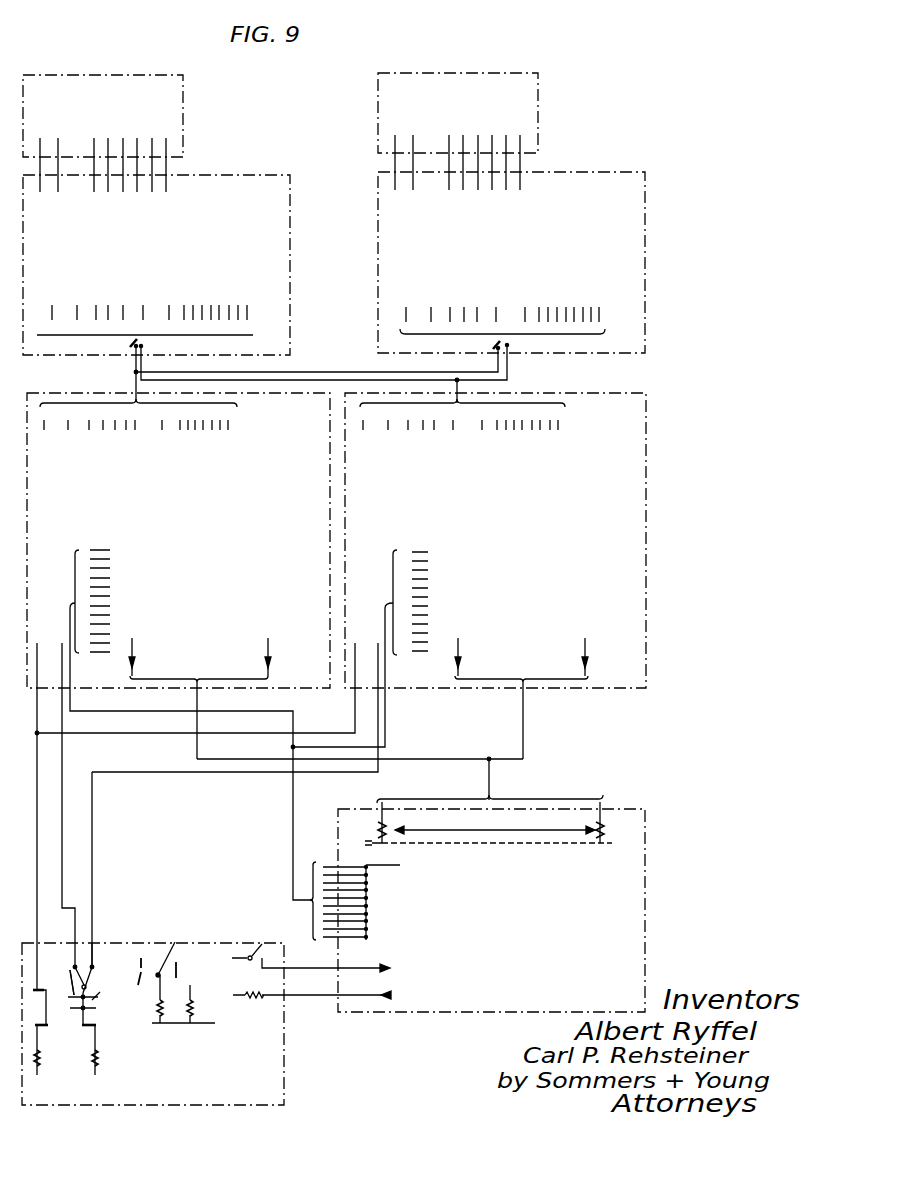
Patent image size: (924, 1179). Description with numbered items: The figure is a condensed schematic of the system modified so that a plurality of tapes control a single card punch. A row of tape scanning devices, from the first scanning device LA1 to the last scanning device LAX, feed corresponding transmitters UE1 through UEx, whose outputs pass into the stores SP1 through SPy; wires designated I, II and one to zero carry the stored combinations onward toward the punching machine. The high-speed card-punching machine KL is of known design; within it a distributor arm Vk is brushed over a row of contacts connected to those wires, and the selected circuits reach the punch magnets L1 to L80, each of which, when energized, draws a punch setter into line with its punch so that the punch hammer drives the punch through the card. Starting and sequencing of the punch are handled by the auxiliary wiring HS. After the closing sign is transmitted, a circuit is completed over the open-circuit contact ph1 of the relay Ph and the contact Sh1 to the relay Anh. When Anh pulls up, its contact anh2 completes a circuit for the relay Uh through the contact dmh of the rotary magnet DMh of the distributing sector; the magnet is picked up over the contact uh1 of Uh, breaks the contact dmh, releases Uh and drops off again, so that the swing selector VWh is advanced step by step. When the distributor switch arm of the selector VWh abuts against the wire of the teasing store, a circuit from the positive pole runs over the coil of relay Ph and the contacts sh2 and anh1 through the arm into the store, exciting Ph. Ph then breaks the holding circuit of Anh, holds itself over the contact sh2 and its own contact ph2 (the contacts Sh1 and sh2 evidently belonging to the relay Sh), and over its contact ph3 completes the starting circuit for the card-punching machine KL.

The scanning device LA1 is at (183, 120).
The scanning device LAX is at (538, 100).
The transmitter UE1 is at (290, 272).
The transmitter UEx is at (620, 165).
The store SP1 is at (330, 458).
The store SPy is at (645, 463).
The high-speed card-punching machine KL is at (477, 919).
The punch magnet L1 is at (385, 835).
The punch magnet L80 is at (603, 842).
The distributor arm Vk is at (372, 868).
The auxiliary wiring HS is at (202, 1016).
The selector VWh is at (94, 966).
The contact of relay Anh anh1 is at (72, 968).
The contact of relay Anh anh2 is at (135, 981).
The open-circuit contact of relay Ph ph1 is at (50, 979).
The contact of relay Ph ph2 is at (96, 1008).
The contact of relay Ph ph3 is at (268, 936).
The open-circuit contact Sh1 is at (50, 1033).
The contact sh2 is at (100, 1020).
The contact of rotary magnet DMh dmh is at (173, 955).
The contact of relay Uh uh1 is at (178, 975).
The relay Uh is at (162, 1013).
The rotary magnet DMh is at (192, 1013).
The relay Anh is at (40, 1058).
The relay Ph is at (98, 1058).
The relay Sh is at (305, 1005).